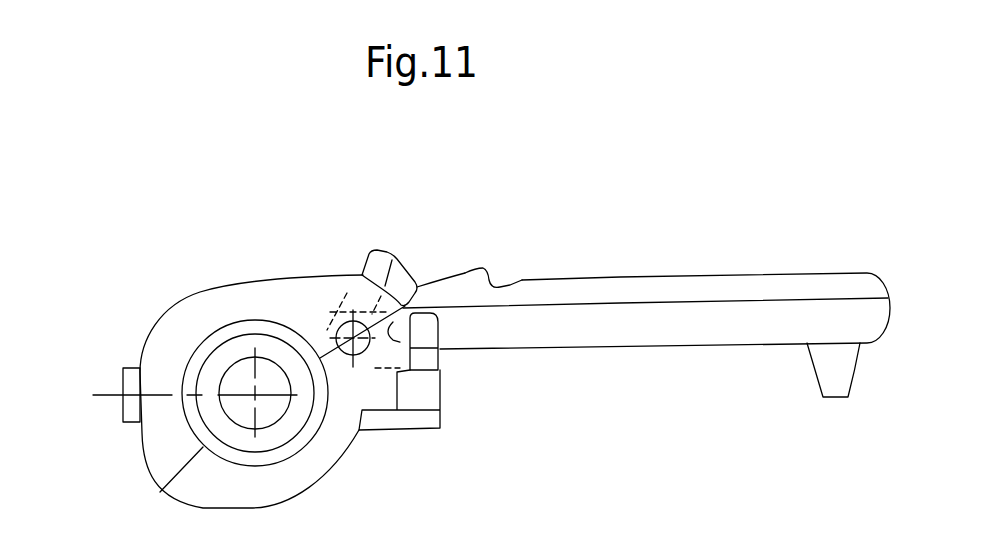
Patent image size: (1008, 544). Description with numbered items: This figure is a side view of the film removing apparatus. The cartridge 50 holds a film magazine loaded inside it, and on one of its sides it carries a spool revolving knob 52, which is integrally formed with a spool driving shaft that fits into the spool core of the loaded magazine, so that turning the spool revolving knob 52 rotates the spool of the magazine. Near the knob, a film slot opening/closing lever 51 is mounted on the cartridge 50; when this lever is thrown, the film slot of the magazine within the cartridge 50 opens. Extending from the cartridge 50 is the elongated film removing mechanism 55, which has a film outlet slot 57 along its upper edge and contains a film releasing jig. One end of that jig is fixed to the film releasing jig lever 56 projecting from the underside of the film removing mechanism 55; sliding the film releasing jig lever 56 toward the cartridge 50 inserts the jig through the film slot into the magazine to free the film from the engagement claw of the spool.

The cartridge 50 is at (345, 462).
The film slot opening/closing lever 51 is at (363, 262).
The spool revolving knob 52 is at (200, 430).
The film removing mechanism 55 is at (830, 272).
The film releasing jig lever 56 is at (838, 397).
The film outlet slot 57 is at (490, 270).